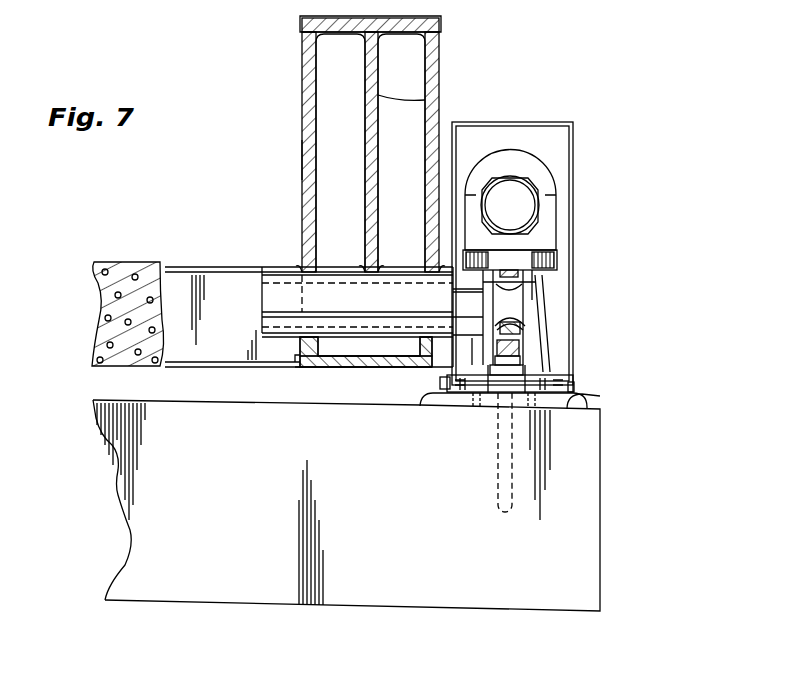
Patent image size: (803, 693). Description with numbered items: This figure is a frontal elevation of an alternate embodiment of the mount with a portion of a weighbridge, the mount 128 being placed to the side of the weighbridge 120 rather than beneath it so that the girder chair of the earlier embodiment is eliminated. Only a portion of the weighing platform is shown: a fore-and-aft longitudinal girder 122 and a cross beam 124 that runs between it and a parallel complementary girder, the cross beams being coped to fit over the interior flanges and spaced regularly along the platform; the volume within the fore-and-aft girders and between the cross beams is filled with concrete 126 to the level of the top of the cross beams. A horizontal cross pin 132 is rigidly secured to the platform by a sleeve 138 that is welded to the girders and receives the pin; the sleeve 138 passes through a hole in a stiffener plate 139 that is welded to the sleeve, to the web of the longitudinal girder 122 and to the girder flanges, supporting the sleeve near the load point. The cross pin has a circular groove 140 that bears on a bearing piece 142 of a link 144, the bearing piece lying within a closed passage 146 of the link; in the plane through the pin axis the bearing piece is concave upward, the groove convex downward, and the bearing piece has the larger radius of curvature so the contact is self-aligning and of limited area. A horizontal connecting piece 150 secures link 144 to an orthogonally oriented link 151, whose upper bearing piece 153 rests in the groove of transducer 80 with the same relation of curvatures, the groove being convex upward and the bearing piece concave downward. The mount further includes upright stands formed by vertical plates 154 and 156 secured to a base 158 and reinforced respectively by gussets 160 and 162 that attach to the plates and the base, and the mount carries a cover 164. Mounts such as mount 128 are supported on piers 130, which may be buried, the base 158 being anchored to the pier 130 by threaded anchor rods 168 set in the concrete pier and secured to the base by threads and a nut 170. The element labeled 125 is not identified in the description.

The weighbridge 120 is at (425, 72).
The stiffener plate 139 is at (437, 80).
The longitudinal girder 122 is at (420, 110).
The tube wall 125 is at (302, 155).
The cover 164 is at (573, 135).
The link 151 is at (505, 160).
The upper bearing piece 153 is at (540, 190).
The transducer 80 is at (523, 213).
The mount 128 is at (585, 214).
The horizontal connecting piece 150 is at (558, 258).
The closed passage 146 is at (548, 283).
The horizontal cross pin 132 is at (485, 313).
The circular groove 140 is at (520, 328).
The bearing piece 142 is at (522, 340).
The link 144 is at (545, 355).
The vertical plate 156 is at (560, 405).
The gusset 162 is at (572, 394).
The nut 170 is at (562, 422).
The gusset 160 is at (466, 385).
The vertical plate 154 is at (472, 365).
The base 158 is at (493, 380).
The threaded anchor rod 168 is at (518, 512).
The cross beam 124 is at (213, 350).
The sleeve 138 is at (398, 332).
The concrete 126 is at (100, 331).
The pier 130 is at (575, 493).